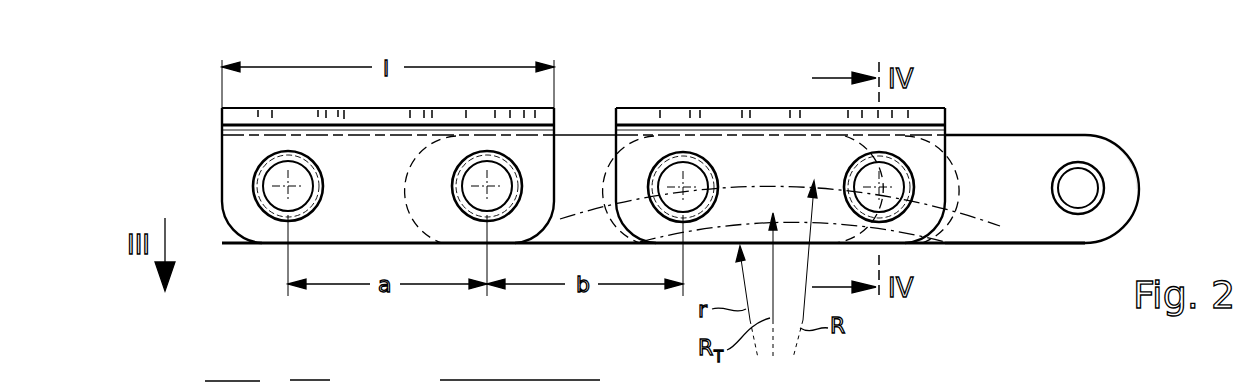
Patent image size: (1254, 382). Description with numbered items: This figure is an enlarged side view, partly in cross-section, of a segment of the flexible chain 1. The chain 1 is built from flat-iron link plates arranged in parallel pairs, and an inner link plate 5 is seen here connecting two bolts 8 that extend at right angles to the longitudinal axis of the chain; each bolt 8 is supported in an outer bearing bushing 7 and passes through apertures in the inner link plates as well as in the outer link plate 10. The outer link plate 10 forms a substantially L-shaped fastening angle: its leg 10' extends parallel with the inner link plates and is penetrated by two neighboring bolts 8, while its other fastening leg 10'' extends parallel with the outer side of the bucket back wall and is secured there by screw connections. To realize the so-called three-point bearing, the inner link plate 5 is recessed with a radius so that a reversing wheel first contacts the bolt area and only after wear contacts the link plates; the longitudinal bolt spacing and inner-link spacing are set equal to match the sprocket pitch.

The flexible chain 1 is at (1160, 148).
The inner link plate 5 is at (580, 148).
The outer bearing bushing 7 is at (310, 165).
The bolt 8 is at (1085, 182).
The outer link plate 10 is at (589, 202).
The leg of outer link plate 10' is at (546, 166).
The fastening leg 10'' is at (587, 105).